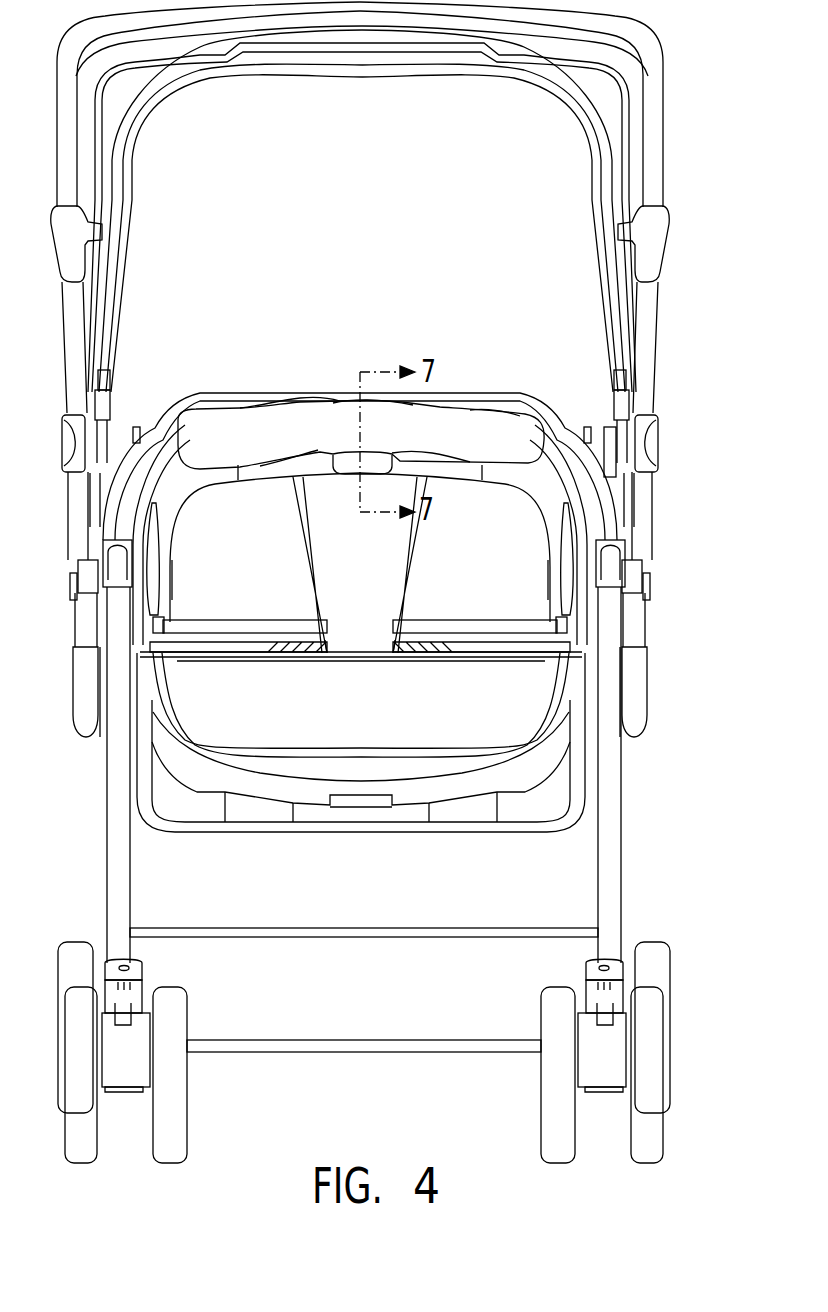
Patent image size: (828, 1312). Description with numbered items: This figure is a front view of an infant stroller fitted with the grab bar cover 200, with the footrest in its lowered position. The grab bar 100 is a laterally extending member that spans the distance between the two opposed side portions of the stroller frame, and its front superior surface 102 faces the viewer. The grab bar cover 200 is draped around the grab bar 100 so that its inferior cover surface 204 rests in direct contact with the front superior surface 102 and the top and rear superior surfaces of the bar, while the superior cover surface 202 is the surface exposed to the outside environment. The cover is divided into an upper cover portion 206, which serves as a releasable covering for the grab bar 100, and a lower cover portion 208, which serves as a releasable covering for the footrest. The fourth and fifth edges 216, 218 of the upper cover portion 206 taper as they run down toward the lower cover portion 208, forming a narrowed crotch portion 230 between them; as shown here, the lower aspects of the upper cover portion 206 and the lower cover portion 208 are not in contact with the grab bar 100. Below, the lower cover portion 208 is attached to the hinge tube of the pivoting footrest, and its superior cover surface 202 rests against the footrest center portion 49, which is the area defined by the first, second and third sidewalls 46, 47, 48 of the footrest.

The grab bar cover 200 is at (406, 505).
The superior cover surface 202 is at (304, 447).
The inferior cover surface 204 is at (525, 682).
The upper cover portion 206 is at (386, 564).
The lower cover portion 208 is at (381, 720).
The fourth edge 216 is at (303, 530).
The fifth edge 218 is at (407, 563).
The crotch portion 230 is at (370, 598).
The grab bar 100 is at (576, 454).
The front superior surface 102 is at (616, 477).
The first sidewall 46 is at (153, 710).
The second sidewall 47 is at (348, 787).
The third sidewall 48 is at (547, 740).
The footrest center portion 49 is at (497, 760).